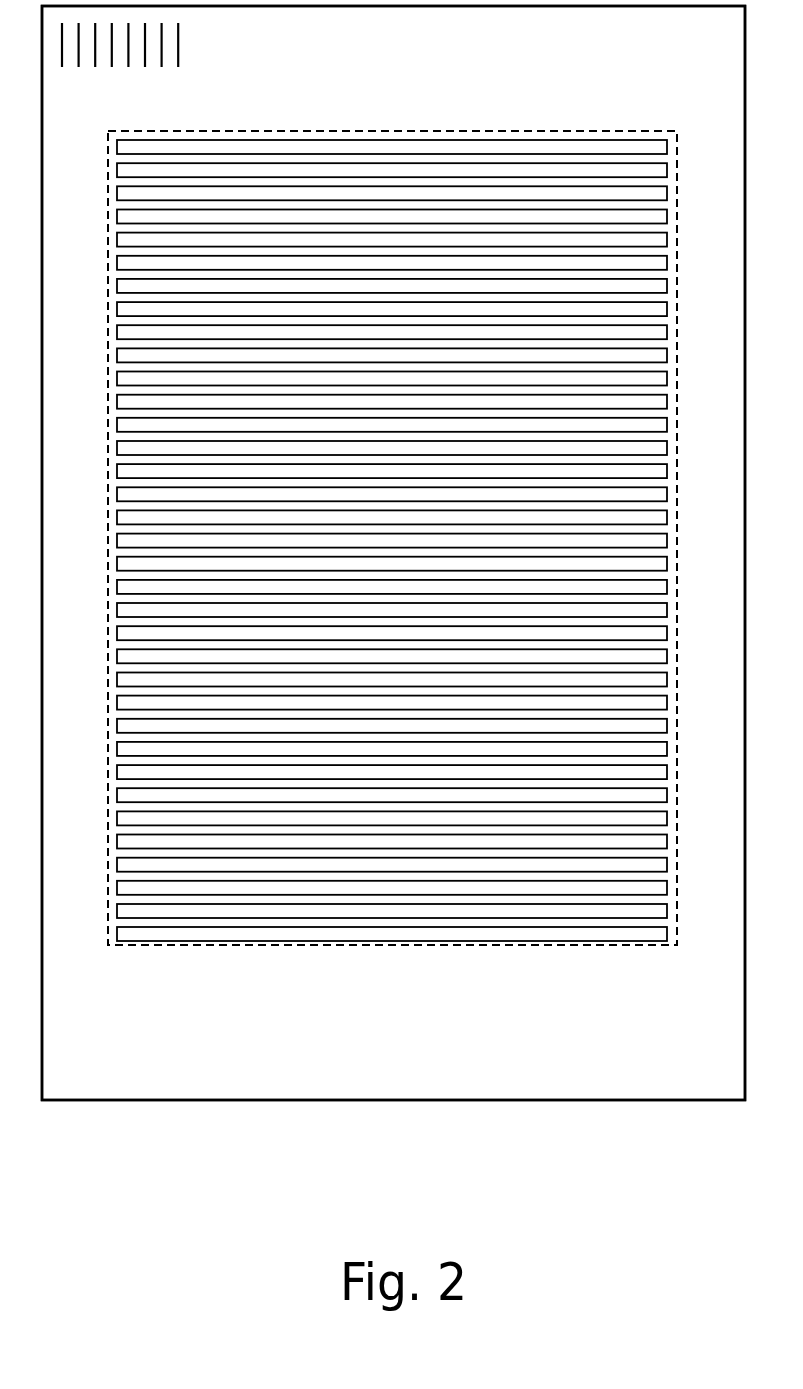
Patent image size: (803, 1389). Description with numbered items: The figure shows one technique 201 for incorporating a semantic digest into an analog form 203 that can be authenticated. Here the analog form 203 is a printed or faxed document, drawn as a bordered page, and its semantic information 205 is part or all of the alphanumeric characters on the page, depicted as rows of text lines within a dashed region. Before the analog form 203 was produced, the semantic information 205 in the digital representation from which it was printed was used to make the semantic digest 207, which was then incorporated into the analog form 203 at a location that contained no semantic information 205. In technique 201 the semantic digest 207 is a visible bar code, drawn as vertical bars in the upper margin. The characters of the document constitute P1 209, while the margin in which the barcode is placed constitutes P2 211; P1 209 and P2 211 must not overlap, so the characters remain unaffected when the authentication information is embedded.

The technique 201 is at (107, 1208).
The analog form 203 is at (393, 575).
The semantic information 205 is at (392, 561).
The semantic digest 207 is at (178, 31).
The P1 209 is at (392, 417).
The P2 211 is at (392, 505).